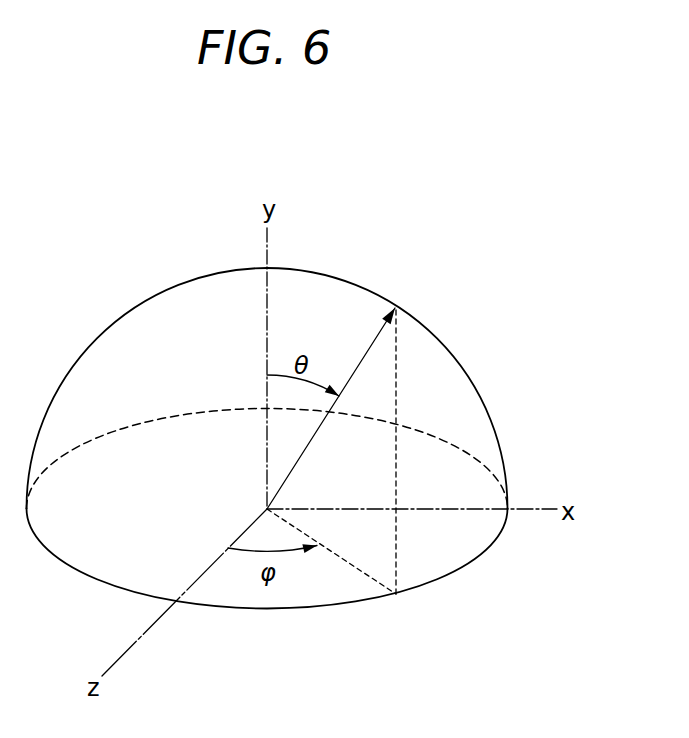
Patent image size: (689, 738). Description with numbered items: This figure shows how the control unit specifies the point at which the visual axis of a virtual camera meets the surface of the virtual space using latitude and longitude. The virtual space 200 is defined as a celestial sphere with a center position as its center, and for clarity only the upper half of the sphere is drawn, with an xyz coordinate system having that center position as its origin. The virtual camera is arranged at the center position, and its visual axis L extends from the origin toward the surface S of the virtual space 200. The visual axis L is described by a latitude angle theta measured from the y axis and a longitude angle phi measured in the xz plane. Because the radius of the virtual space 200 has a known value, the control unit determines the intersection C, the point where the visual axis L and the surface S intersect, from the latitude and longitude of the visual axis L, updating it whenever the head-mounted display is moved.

The virtual space 200 is at (98, 290).
The surface of the virtual space S is at (192, 307).
The visual axis L is at (368, 347).
The intersection C is at (395, 307).